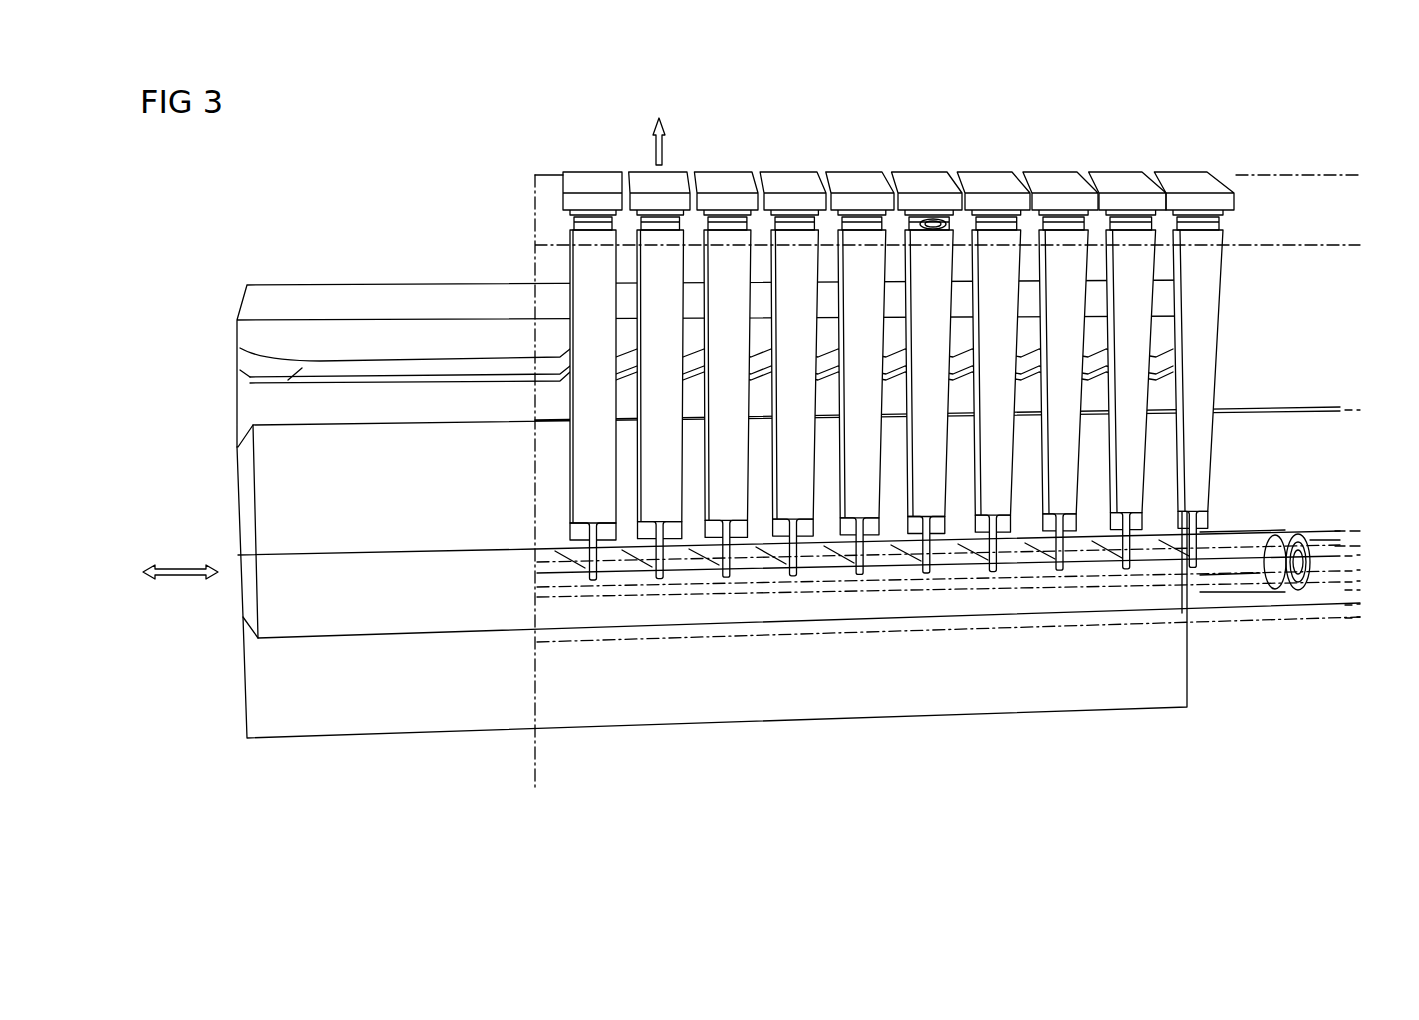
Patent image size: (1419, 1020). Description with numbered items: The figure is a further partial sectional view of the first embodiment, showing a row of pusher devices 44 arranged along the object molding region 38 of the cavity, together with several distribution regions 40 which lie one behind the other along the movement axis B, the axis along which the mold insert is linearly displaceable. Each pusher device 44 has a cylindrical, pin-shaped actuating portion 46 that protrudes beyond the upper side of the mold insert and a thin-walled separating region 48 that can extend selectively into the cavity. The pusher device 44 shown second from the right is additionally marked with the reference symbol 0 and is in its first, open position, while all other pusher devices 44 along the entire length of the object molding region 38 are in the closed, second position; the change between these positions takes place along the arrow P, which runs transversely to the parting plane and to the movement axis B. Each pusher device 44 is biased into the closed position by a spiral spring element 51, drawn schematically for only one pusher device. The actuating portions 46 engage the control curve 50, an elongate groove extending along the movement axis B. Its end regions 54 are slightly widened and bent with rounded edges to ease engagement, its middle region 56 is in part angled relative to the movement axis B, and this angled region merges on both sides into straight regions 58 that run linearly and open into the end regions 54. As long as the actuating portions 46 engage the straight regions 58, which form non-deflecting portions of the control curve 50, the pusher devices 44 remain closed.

The object molding region 38 is at (1257, 590).
The distribution regions 40 is at (1280, 527).
The pusher device 44 is at (585, 260).
The actuating portion 46 is at (418, 608).
The separating region 48 is at (597, 605).
The control curve 50 is at (242, 385).
The spiral spring element 51 is at (935, 219).
The end region 54 is at (240, 357).
The middle region 56 is at (238, 592).
The straight regions 58 is at (470, 362).
The reference symbol O 0 is at (645, 260).
The arrow P is at (668, 150).
The movement axis B is at (178, 566).